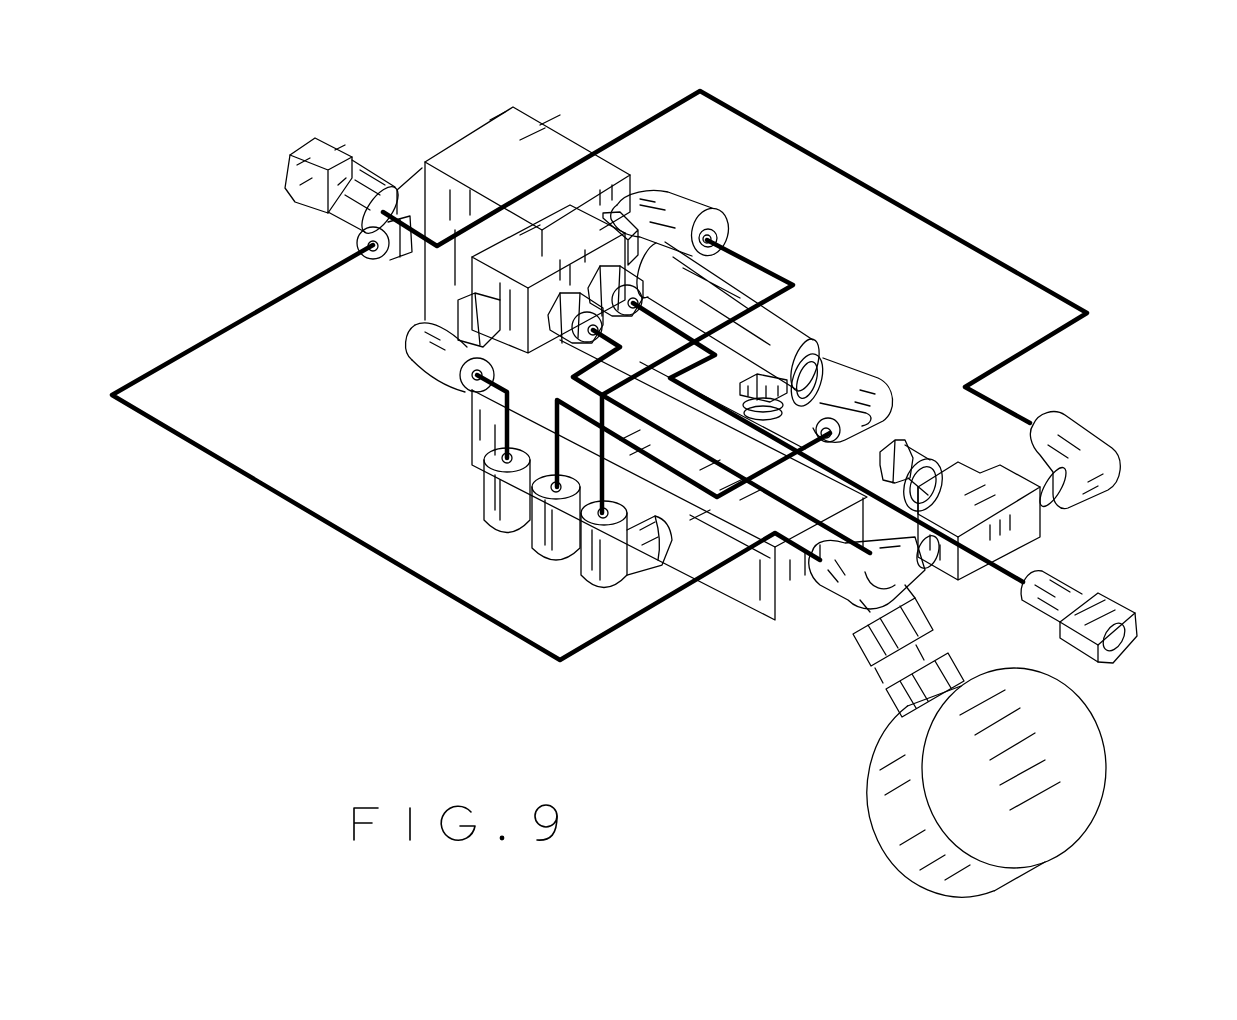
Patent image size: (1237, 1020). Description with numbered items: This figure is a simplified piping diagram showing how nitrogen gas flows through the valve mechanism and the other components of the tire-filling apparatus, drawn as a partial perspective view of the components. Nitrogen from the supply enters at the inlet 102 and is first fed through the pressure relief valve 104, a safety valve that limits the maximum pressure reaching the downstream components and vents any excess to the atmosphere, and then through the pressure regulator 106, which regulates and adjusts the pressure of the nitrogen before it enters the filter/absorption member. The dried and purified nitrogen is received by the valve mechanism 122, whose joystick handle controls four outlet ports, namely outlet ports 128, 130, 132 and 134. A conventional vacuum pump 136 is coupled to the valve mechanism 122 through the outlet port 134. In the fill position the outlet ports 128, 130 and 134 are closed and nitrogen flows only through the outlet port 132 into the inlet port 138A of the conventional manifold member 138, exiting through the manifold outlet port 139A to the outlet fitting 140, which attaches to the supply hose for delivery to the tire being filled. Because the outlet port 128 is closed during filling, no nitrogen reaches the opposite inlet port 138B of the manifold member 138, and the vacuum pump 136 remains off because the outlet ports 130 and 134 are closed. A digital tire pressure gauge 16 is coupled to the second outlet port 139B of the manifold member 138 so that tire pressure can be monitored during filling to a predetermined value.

The digital tire pressure gauge 16 is at (1100, 822).
The inlet 102 is at (338, 92).
The pressure relief valve 104 is at (985, 407).
The pressure regulator 106 is at (540, 130).
The valve mechanism 122 is at (762, 598).
The outlet port 128 is at (612, 580).
The outlet port 130 is at (543, 553).
The outlet port 132 is at (493, 530).
The outlet port 134 is at (843, 397).
The vacuum pump 136 is at (790, 316).
The manifold member 138 is at (488, 285).
The inlet port 138A is at (683, 207).
The inlet port 138B is at (437, 366).
The manifold outlet port 139A is at (665, 292).
The second outlet port 139B is at (573, 333).
The outlet fitting 140 is at (1117, 603).